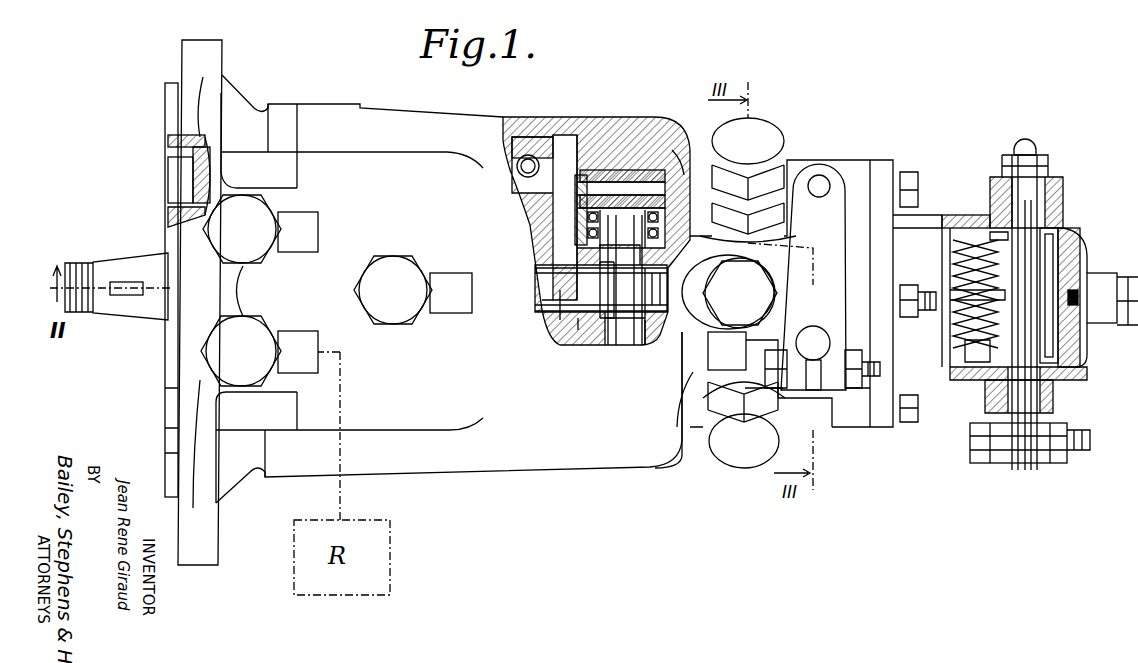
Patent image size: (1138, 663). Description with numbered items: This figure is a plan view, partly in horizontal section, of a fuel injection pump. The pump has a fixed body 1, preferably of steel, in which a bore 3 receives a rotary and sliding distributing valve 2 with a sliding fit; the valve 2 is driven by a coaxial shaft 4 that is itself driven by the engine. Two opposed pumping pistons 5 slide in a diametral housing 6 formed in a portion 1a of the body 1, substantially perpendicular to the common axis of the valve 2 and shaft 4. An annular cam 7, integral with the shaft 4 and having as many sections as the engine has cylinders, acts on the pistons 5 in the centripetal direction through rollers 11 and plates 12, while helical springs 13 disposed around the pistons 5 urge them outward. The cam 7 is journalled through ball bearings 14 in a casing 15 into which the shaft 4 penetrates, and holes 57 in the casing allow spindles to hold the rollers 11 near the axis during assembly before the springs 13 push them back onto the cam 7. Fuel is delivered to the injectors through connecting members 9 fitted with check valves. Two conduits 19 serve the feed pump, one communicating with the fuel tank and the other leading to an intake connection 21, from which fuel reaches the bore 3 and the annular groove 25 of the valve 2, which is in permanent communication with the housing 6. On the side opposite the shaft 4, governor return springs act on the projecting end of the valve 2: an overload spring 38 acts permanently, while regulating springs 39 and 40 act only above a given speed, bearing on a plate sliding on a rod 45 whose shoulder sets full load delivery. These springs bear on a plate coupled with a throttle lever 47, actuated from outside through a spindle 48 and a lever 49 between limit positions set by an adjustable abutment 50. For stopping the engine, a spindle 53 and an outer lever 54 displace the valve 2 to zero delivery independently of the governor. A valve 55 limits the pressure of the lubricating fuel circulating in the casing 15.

The fixed body 1 is at (690, 168).
The portion of body 1a is at (578, 326).
The rotary and sliding valve 2 is at (572, 296).
The bore 3 is at (558, 318).
The coaxial shaft 4 is at (147, 272).
The pumping pistons 5 is at (618, 252).
The diametral housing 6 is at (636, 335).
The annular cam 7 is at (612, 195).
The connecting members 9 is at (757, 143).
The rollers 11 is at (640, 170).
The plates 12 is at (582, 193).
The springs 13 is at (575, 237).
The ball bearings 14 is at (529, 156).
The casing 15 is at (404, 404).
The conduits 19 is at (240, 336).
The intake connection 21 is at (764, 304).
The annular groove 25 is at (612, 322).
The overload spring 38 is at (990, 245).
The regulating spring 39 is at (968, 336).
The regulating spring 40 is at (960, 312).
The rod 45 is at (952, 296).
The throttle lever 47 is at (1060, 276).
The spindle 48 is at (1024, 390).
The lever 49 is at (1018, 455).
The adjustable abutment 50 is at (1092, 323).
The spindle 53 is at (813, 340).
The outer lever 54 is at (834, 224).
The valve 55 is at (400, 283).
The holes 57 is at (672, 150).